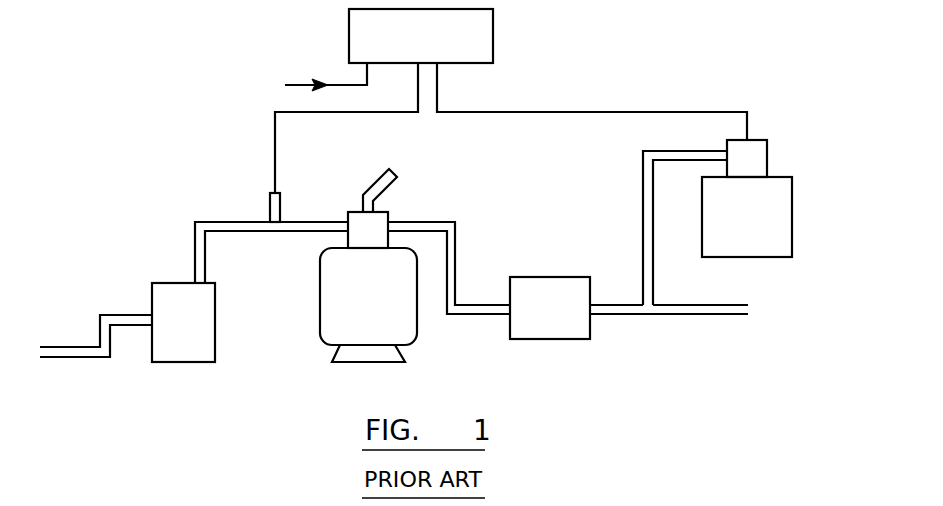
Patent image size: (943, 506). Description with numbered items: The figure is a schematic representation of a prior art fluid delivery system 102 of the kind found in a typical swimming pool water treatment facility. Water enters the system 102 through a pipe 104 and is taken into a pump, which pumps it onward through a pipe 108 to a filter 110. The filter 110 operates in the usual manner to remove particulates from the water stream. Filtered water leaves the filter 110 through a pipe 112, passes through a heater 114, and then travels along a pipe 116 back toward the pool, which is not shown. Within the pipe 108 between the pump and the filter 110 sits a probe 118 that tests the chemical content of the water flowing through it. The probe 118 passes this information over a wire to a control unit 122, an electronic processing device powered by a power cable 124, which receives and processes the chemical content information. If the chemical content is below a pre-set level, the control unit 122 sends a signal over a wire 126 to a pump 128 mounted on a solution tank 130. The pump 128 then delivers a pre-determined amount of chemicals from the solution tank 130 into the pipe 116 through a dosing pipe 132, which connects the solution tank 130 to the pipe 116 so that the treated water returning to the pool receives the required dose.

The fluid delivery system 102 is at (242, 166).
The pipe 104 is at (122, 316).
The pipe 108 is at (236, 229).
The filter 110 is at (351, 306).
The pipe 112 is at (452, 272).
The heater 114 is at (533, 319).
The pipe 116 is at (630, 312).
The probe 118 is at (282, 211).
The control unit 122 is at (404, 48).
The power cable 124 is at (299, 81).
The wire 126 is at (630, 110).
The pump 128 is at (750, 160).
The solution tank 130 is at (730, 223).
The dosing pipe 132 is at (648, 198).